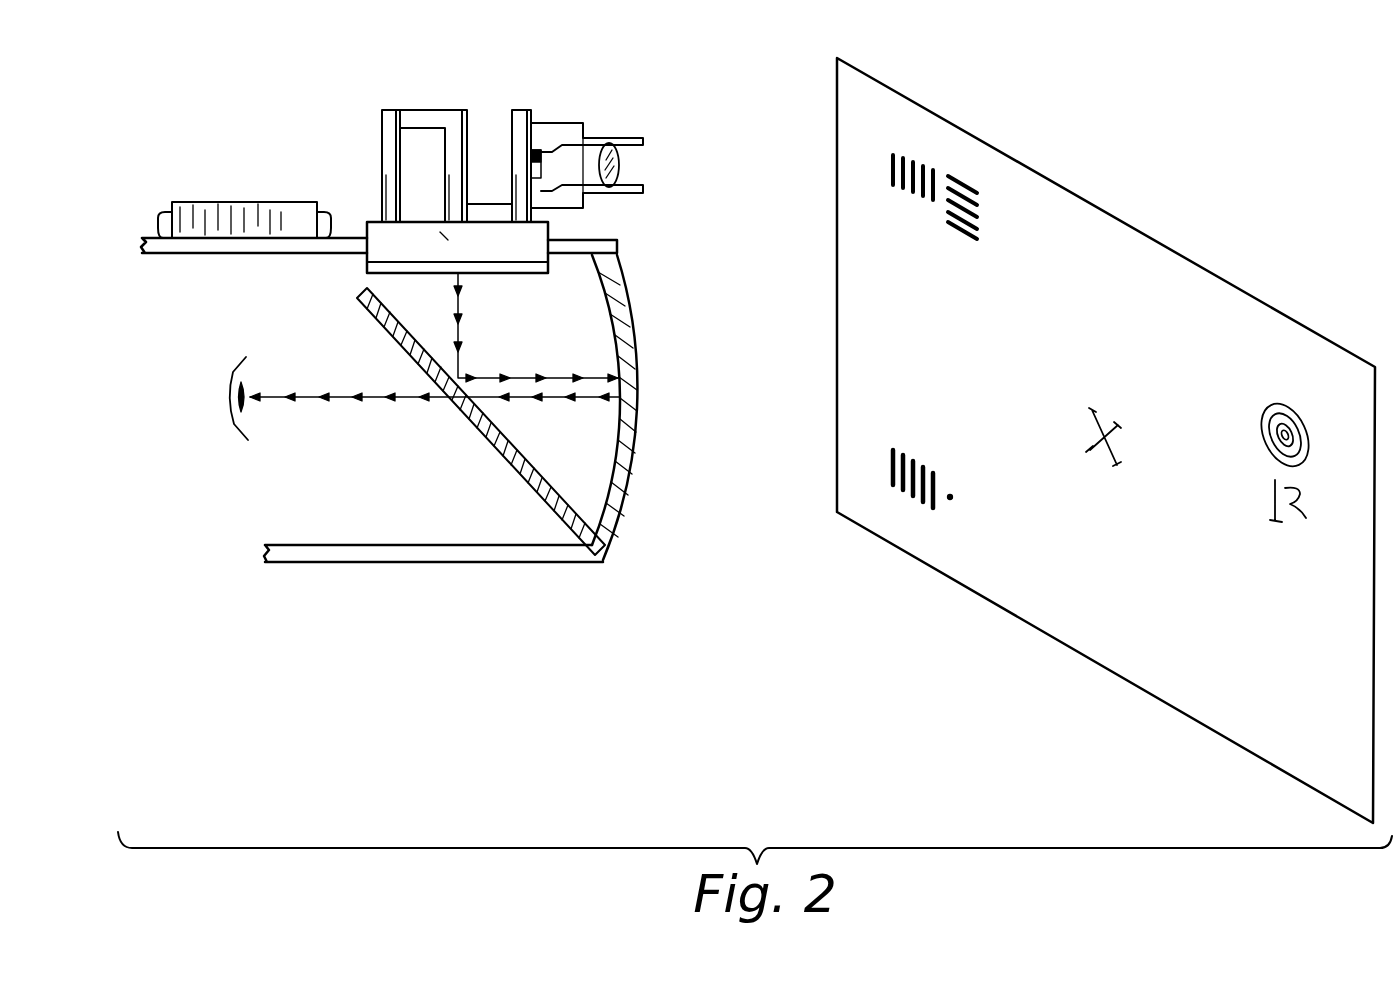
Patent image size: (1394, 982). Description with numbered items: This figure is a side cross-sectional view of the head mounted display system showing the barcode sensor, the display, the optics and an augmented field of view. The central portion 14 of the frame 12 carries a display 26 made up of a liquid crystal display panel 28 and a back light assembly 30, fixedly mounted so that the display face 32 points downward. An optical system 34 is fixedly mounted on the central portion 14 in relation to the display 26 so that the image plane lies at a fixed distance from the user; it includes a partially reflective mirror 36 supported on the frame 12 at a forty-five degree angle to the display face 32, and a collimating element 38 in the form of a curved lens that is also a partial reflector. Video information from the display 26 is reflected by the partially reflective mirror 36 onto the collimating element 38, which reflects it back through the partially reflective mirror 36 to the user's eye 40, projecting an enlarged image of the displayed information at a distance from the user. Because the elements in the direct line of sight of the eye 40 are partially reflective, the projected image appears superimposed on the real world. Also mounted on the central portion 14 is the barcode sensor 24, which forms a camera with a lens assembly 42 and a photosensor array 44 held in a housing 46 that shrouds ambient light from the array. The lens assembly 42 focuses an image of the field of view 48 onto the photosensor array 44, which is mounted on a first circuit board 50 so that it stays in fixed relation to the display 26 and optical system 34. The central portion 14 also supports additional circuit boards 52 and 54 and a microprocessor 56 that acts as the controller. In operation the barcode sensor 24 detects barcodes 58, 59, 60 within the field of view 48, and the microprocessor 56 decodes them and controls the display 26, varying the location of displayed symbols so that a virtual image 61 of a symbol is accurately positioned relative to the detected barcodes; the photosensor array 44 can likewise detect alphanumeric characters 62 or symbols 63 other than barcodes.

The frame 12 is at (622, 248).
The central portion 14 is at (208, 250).
The barcode sensor 24 is at (660, 104).
The display 26 is at (400, 240).
The liquid crystal display panel 28 is at (397, 270).
The back light assembly 30 is at (520, 247).
The display face 32 is at (496, 280).
The optical system 34 is at (518, 490).
The partially reflective mirror 36 is at (492, 432).
The collimating element 38 is at (636, 446).
The eye 40 is at (252, 418).
The lens assembly 42 is at (618, 166).
The photosensor array 44 is at (538, 150).
The housing 46 is at (584, 140).
The field of view 48 is at (1068, 606).
The first circuit board 50 is at (508, 130).
The circuit board 52 is at (386, 136).
The circuit board 54 is at (450, 132).
The microprocessor 56 is at (220, 210).
The barcode 58 is at (890, 168).
The barcode 59 is at (965, 182).
The barcode 60 is at (938, 482).
The virtual image of a displayed symbol 61 is at (1113, 440).
The alphanumeric characters 62 is at (1310, 510).
The symbols 63 is at (1308, 422).